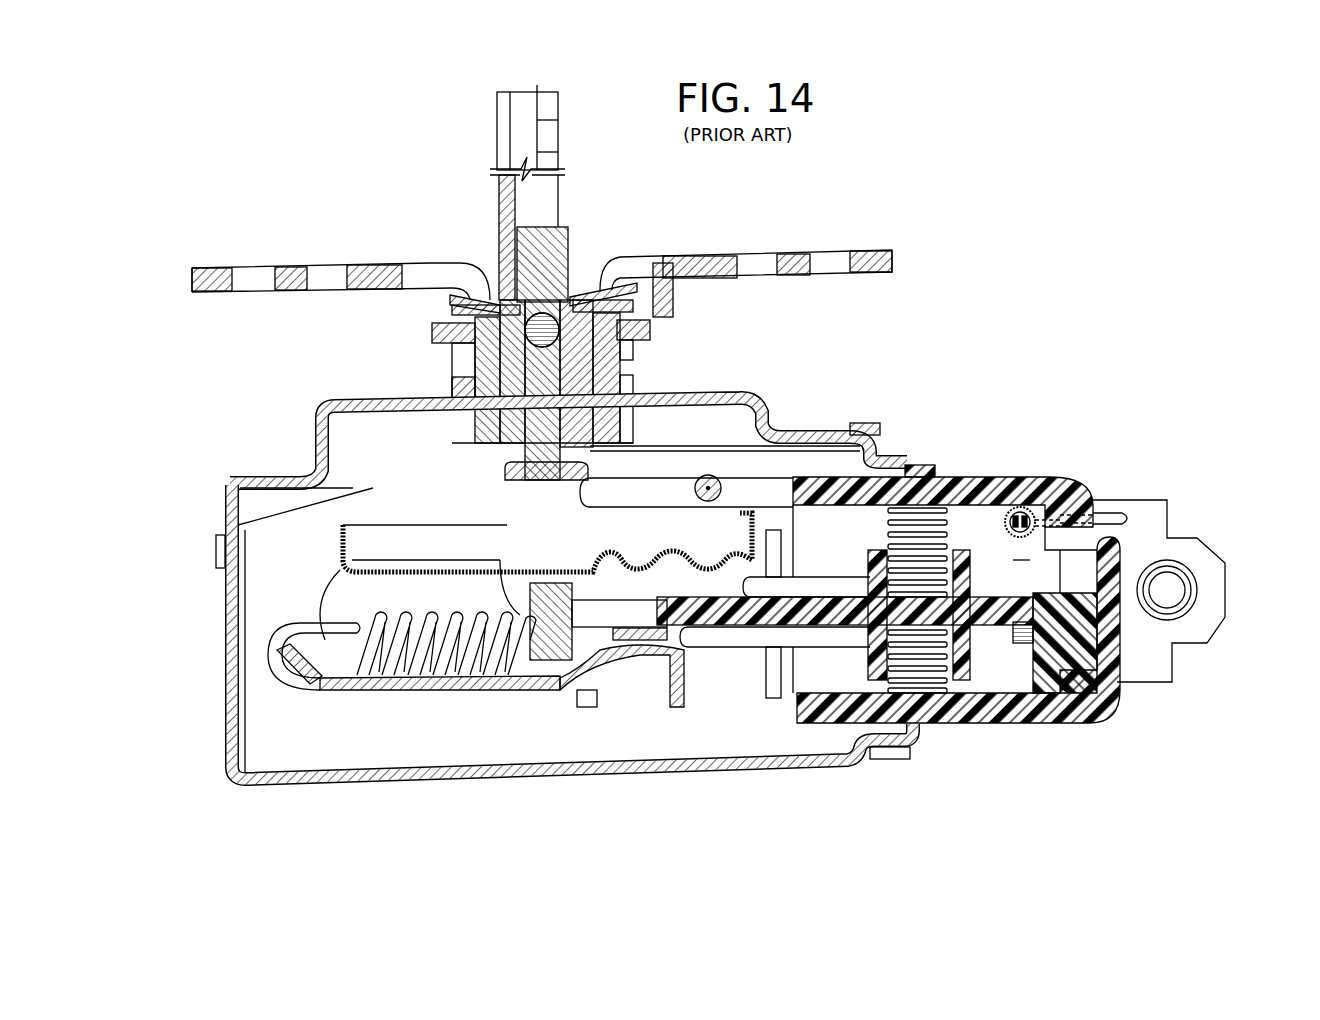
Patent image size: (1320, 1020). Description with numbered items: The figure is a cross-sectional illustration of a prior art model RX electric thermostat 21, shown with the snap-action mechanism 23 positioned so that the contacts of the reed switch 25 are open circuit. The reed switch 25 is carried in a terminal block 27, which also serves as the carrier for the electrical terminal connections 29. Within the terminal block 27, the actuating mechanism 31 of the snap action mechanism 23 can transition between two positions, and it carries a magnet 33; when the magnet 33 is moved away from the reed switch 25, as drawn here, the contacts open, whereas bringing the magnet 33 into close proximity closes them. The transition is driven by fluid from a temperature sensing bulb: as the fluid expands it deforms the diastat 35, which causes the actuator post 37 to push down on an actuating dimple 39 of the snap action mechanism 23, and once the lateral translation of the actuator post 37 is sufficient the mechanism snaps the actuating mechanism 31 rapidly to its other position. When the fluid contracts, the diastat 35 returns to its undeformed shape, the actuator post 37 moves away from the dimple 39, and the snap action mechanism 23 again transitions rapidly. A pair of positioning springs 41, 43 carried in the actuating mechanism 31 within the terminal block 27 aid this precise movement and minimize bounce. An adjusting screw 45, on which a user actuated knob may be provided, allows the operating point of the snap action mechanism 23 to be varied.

The model RX electric thermostat 21 is at (1193, 416).
The snap-action mechanism 23 is at (425, 746).
The reed switch 25 is at (1013, 507).
The terminal block 27 is at (984, 472).
The electrical terminal connections 29 is at (1190, 543).
The actuating mechanism 31 is at (1080, 660).
The magnet 33 is at (1030, 645).
The diastat 35 is at (340, 533).
The actuator post 37 is at (610, 690).
The actuating dimple 39 is at (553, 690).
The positioning spring 41 is at (932, 520).
The positioning spring 43 is at (940, 690).
The adjusting screw 45 is at (563, 188).